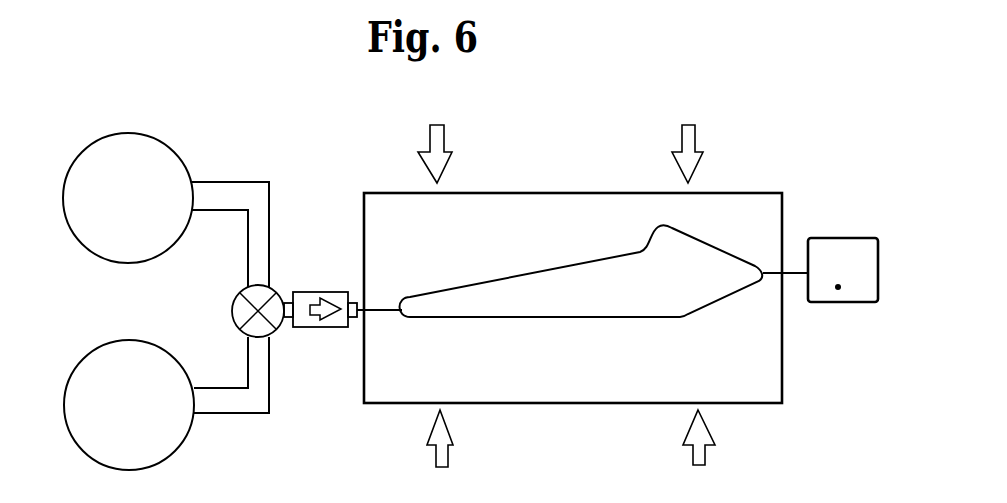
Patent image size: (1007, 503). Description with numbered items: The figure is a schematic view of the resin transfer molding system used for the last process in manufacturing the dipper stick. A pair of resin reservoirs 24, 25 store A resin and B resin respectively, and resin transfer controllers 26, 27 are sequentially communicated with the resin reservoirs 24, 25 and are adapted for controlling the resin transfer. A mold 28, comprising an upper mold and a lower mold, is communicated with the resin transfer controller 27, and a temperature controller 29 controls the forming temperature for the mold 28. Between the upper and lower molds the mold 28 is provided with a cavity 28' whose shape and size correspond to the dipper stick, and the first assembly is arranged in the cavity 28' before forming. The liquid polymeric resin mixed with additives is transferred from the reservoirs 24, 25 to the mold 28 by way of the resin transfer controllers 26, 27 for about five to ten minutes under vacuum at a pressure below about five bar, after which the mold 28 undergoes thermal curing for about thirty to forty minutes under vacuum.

The resin reservoir 24 is at (172, 163).
The resin reservoir 25 is at (145, 358).
The resin transfer controller 26 is at (263, 328).
The resin transfer controller 27 is at (327, 290).
The mold 28 is at (573, 296).
The cavity 28' is at (620, 301).
The temperature controller 29 is at (838, 247).